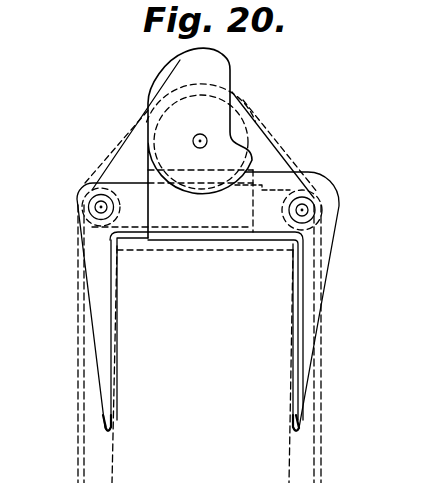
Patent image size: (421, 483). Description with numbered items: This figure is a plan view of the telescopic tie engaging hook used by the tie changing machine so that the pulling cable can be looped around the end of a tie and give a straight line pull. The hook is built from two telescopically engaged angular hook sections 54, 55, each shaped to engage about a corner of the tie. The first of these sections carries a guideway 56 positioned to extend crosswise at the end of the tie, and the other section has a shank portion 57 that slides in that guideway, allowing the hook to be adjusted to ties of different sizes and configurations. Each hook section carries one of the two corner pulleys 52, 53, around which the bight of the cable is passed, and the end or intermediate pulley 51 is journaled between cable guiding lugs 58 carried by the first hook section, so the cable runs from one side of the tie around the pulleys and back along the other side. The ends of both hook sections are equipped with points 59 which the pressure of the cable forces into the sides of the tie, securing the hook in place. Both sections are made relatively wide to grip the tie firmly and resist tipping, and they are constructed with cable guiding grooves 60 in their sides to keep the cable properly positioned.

The intermediate pulley 51 is at (238, 110).
The corner pulley 52 is at (92, 188).
The corner pulley 53 is at (326, 183).
The hook section 54 is at (336, 243).
The hook section 55 is at (77, 229).
The guideway 56 is at (290, 174).
The shank portion 57 is at (132, 192).
The cable guiding lugs 58 is at (170, 82).
The points 59 is at (116, 409).
The cable guiding grooves 60 is at (76, 251).